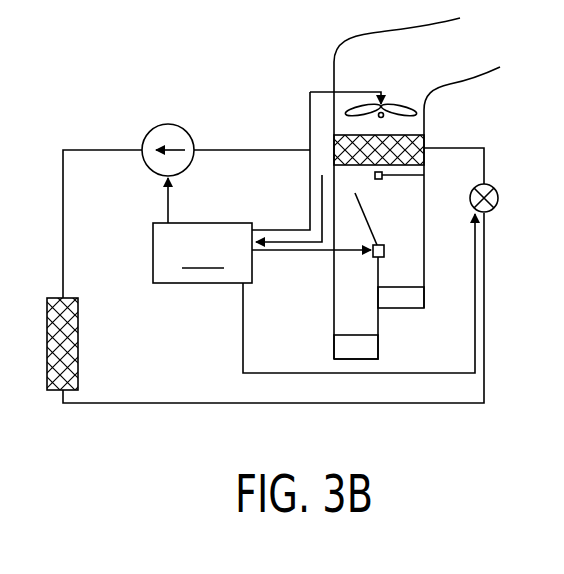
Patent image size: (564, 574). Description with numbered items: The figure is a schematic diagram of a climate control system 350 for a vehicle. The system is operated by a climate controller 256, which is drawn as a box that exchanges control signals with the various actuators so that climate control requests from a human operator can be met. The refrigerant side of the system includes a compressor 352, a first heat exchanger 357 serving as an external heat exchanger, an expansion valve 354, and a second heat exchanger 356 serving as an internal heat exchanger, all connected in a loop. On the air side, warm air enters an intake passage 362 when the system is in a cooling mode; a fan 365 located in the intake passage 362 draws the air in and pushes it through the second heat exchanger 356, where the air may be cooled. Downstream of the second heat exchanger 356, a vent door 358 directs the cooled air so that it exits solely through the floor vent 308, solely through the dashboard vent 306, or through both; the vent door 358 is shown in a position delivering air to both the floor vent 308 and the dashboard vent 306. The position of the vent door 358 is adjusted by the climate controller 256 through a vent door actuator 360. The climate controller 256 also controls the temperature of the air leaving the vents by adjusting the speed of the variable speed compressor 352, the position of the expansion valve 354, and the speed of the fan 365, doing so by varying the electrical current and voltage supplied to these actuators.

The climate control system 350 is at (122, 58).
The compressor 352 is at (156, 129).
The expansion valve 354 is at (497, 190).
The second heat exchanger 356 is at (415, 140).
The first heat exchanger 357 is at (67, 342).
The vent door 358 is at (368, 218).
The vent door actuator 360 is at (386, 250).
The intake passage 362 is at (480, 36).
The fan 365 is at (386, 108).
The climate controller 256 is at (267, 187).
The dashboard vent 306 is at (405, 305).
The floor vent 308 is at (344, 345).